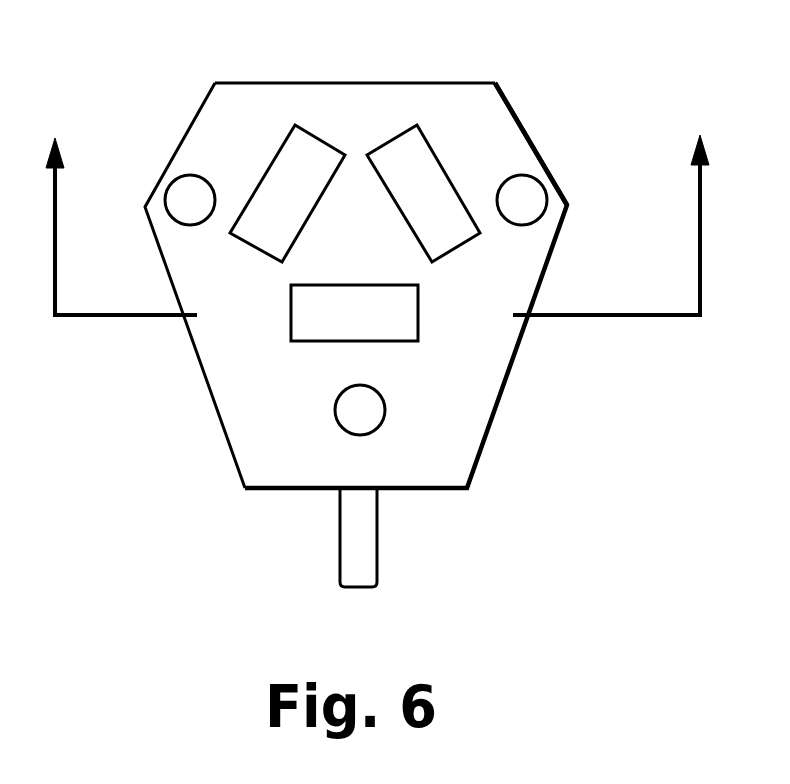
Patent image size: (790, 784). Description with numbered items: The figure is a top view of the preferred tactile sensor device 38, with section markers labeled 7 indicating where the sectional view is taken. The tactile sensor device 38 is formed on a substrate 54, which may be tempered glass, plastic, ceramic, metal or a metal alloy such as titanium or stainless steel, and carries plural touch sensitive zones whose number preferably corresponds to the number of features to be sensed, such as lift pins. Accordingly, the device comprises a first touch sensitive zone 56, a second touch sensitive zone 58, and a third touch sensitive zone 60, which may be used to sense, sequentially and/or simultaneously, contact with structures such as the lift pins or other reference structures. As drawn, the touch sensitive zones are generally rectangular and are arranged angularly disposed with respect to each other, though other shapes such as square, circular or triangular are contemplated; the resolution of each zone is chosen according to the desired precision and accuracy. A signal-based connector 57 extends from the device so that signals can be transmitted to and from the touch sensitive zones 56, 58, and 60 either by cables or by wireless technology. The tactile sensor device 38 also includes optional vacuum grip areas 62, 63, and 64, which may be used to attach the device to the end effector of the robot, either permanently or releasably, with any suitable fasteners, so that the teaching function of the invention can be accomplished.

The section line 7- 7 is at (377, 199).
The tactile sensor device 38 is at (450, 373).
The substrate 54 is at (497, 113).
The first touch sensitive zone 56 is at (303, 327).
The signal-based connector 57 is at (358, 588).
The second touch sensitive zone 58 is at (437, 193).
The third touch sensitive zone 60 is at (303, 150).
The vacuum grip area 62 is at (352, 417).
The vacuum grip area 63 is at (525, 202).
The vacuum grip area 64 is at (185, 193).